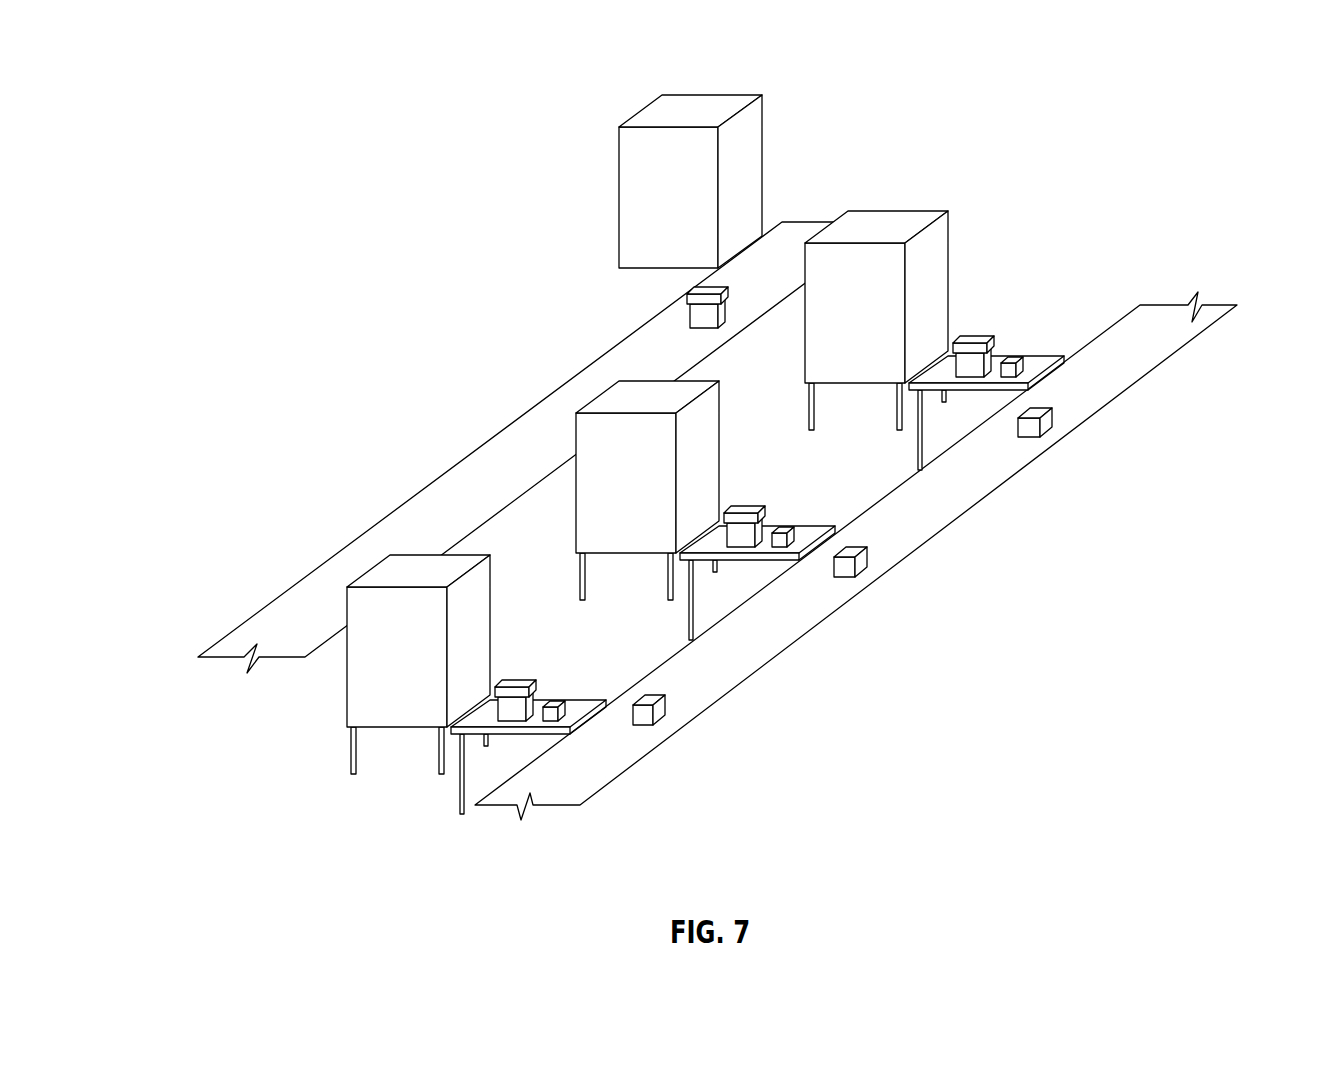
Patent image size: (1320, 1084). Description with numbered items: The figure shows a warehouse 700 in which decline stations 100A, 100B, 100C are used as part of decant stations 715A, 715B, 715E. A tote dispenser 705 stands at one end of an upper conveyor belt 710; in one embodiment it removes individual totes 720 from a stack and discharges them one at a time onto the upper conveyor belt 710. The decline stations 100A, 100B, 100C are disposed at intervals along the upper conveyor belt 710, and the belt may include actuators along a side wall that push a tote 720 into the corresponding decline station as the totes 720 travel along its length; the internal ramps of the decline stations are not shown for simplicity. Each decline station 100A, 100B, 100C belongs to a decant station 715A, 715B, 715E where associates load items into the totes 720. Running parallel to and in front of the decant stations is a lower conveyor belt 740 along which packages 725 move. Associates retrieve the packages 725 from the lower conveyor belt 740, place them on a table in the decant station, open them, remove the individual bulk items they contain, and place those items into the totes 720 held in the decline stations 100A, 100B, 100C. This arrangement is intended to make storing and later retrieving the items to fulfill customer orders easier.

The warehouse 700 is at (340, 95).
The tote dispenser 705 is at (745, 95).
The upper conveyor belt 710 is at (538, 400).
The decant station 715A is at (939, 305).
The decant station 715B is at (681, 496).
The decant station 715E is at (392, 697).
The tote 720 is at (690, 317).
The package 725 is at (1022, 363).
The lower conveyor belt 740 is at (782, 653).
The decline station 100A is at (949, 236).
The decline station 100B is at (632, 382).
The decline station 100C is at (392, 567).